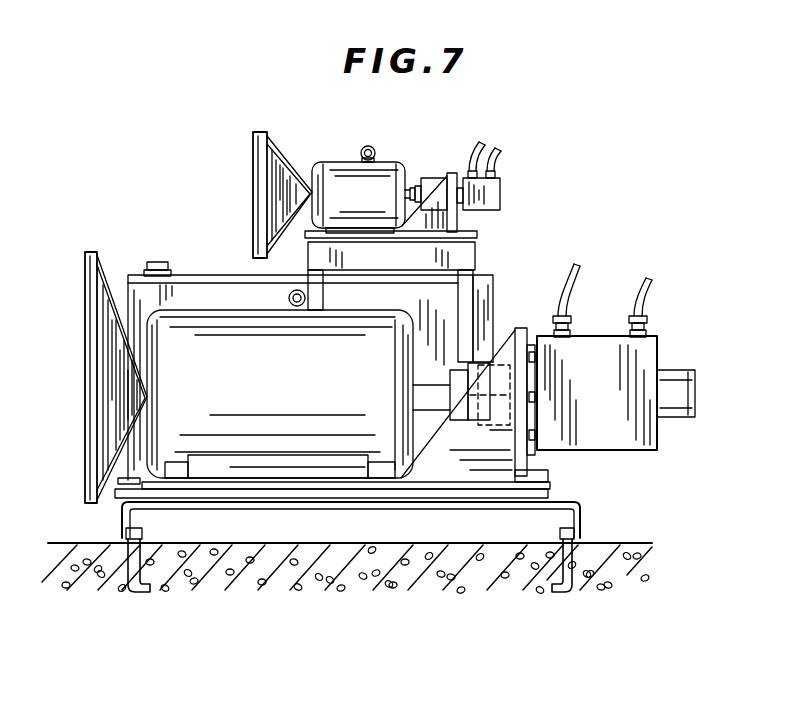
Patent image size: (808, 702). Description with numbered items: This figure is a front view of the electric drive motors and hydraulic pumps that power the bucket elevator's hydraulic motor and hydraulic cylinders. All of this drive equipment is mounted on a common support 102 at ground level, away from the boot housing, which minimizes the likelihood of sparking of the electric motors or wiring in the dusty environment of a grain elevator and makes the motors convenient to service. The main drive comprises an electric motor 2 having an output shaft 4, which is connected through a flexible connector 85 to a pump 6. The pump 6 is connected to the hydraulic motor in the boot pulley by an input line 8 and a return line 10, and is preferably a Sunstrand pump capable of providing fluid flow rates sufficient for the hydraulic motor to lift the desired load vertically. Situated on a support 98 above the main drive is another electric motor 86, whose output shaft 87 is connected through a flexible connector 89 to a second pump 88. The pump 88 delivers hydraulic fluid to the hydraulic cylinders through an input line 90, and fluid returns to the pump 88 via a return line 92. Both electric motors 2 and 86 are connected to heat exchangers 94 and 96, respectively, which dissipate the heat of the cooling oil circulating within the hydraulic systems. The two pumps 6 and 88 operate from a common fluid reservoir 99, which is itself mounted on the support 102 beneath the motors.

The electric motor 2 is at (294, 400).
The output shaft 4 is at (433, 395).
The pump 6 is at (608, 410).
The input line 8 is at (566, 300).
The return line 10 is at (650, 302).
The flexible connector 85 is at (535, 457).
The electric motor 86 is at (369, 200).
The output shaft 87 is at (414, 186).
The pump 88 is at (496, 200).
The flexible connector 89 is at (447, 176).
The input line 90 is at (482, 141).
The return line 92 is at (503, 152).
The heat exchanger 94 is at (262, 216).
The heat exchanger 96 is at (93, 393).
The support 98 is at (478, 245).
The common fluid reservoir 99 is at (214, 292).
The common support 102 is at (582, 505).